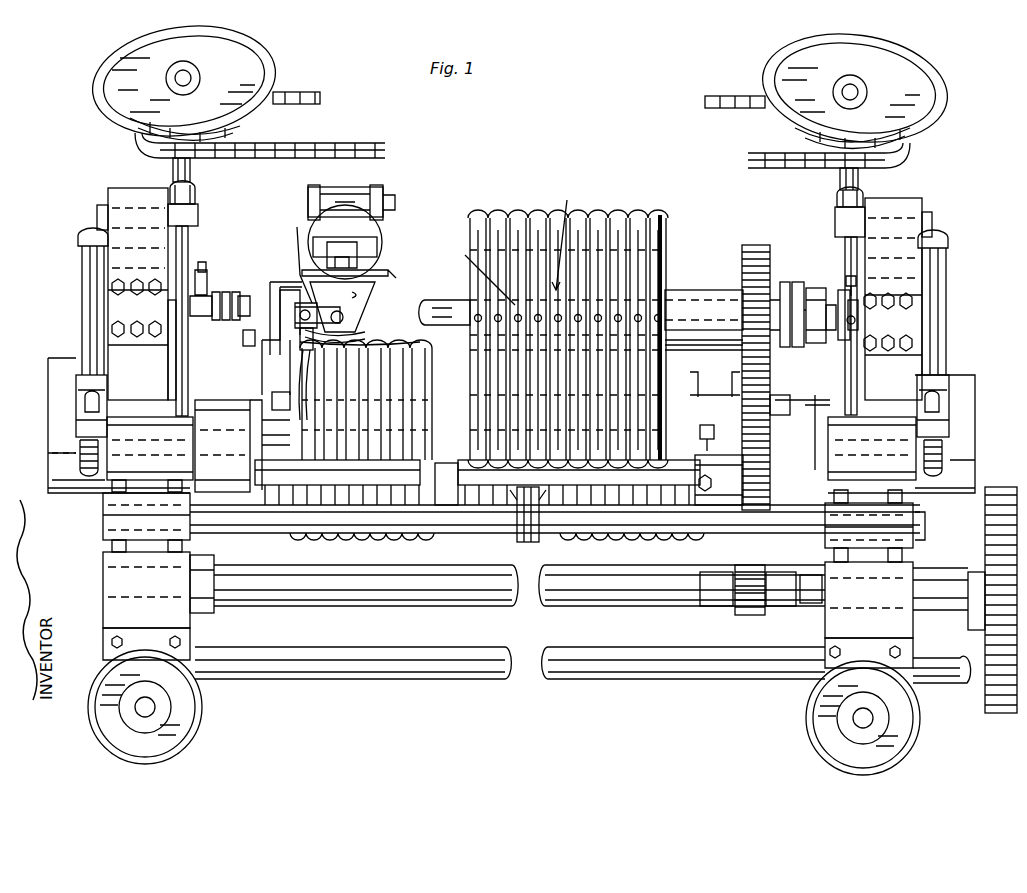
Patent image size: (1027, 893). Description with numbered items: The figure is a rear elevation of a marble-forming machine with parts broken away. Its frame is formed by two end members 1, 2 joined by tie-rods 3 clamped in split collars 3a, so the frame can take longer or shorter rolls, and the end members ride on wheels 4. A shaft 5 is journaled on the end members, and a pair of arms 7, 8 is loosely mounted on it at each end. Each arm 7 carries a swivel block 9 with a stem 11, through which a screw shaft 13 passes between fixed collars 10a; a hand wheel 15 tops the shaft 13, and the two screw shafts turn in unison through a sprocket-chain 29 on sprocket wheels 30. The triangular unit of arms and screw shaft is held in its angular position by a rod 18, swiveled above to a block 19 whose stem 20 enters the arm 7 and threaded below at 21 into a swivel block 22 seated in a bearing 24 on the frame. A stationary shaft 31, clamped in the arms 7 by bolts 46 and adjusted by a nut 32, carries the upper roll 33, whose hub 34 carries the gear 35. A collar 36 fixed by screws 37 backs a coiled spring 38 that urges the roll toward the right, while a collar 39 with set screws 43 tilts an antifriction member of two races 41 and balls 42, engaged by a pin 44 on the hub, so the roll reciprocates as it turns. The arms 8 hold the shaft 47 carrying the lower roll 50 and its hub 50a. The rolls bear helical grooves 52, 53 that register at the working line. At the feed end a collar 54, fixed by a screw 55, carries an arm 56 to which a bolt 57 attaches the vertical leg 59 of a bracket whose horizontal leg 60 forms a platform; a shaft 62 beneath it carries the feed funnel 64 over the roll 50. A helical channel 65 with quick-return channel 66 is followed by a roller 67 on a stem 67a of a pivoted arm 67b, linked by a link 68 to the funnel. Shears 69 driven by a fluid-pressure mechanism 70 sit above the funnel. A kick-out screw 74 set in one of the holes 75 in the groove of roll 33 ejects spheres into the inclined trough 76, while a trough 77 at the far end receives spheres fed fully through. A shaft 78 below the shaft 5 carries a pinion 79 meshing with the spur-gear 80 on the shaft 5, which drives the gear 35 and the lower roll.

The end member 1 is at (910, 568).
The end member 2 is at (103, 550).
The tie-rods 3 is at (696, 533).
The split collars 3a is at (926, 530).
The wheels 4 is at (202, 714).
The shaft 5 is at (48, 445).
The arm 7 is at (908, 198).
The arm 8 is at (525, 415).
The swivel block 9 is at (199, 222).
The fixed collar 10a is at (197, 193).
The stem 11 is at (97, 212).
The screw shaft 13 is at (192, 174).
The hand wheel 15 is at (519, 84).
The rod or shaft 18 is at (82, 311).
The block 19 is at (78, 243).
The stem 20 is at (190, 252).
The threaded lower end 21 is at (90, 470).
The swivel block 22 is at (76, 400).
The bearing 24 is at (511, 448).
The sprocket-chain 29 is at (335, 133).
The sprocket wheels 30 is at (238, 131).
The stationary shaft 31 is at (168, 338).
The nut 32 is at (860, 290).
The cylinder or roll 33 is at (668, 232).
The hub 34 is at (710, 290).
The gear 35 is at (752, 245).
The collar 36 is at (205, 318).
The screws 37 is at (218, 290).
The coiled spring 38 is at (245, 296).
The collar 39 is at (852, 346).
The annular races 41 is at (804, 299).
The antifriction balls 42 is at (785, 392).
The set screws 43 is at (798, 348).
The pin 44 is at (782, 280).
The bolts 46 is at (512, 315).
The shaft 47 is at (438, 430).
The cylinder or roll 50 is at (480, 535).
The hub 50a is at (704, 425).
The helical groove 52 is at (508, 215).
The helical groove 53 is at (395, 541).
The collar 54 is at (277, 434).
The screw 55 is at (280, 385).
The arm 56 is at (262, 365).
The bolt 57 is at (236, 344).
The vertical leg 59 is at (253, 294).
The horizontal leg or platform 60 is at (286, 282).
The shaft 62 is at (362, 294).
The feed funnel 64 is at (366, 332).
The helical channel 65 is at (295, 507).
The quick-return channel 66 is at (268, 402).
The roller 67 is at (300, 345).
The stem 67a is at (365, 336).
The arm 67b is at (297, 227).
The link 68 is at (345, 316).
The shears 69 is at (360, 272).
The fluid-pressure mechanism 70 is at (351, 232).
The kick-out screw 74 is at (568, 235).
The holes 75 is at (477, 272).
The trough 76 is at (500, 465).
The trough 77 is at (715, 377).
The shaft 78 is at (508, 606).
The pinion 79 is at (735, 612).
The spur-gear 80 is at (750, 477).